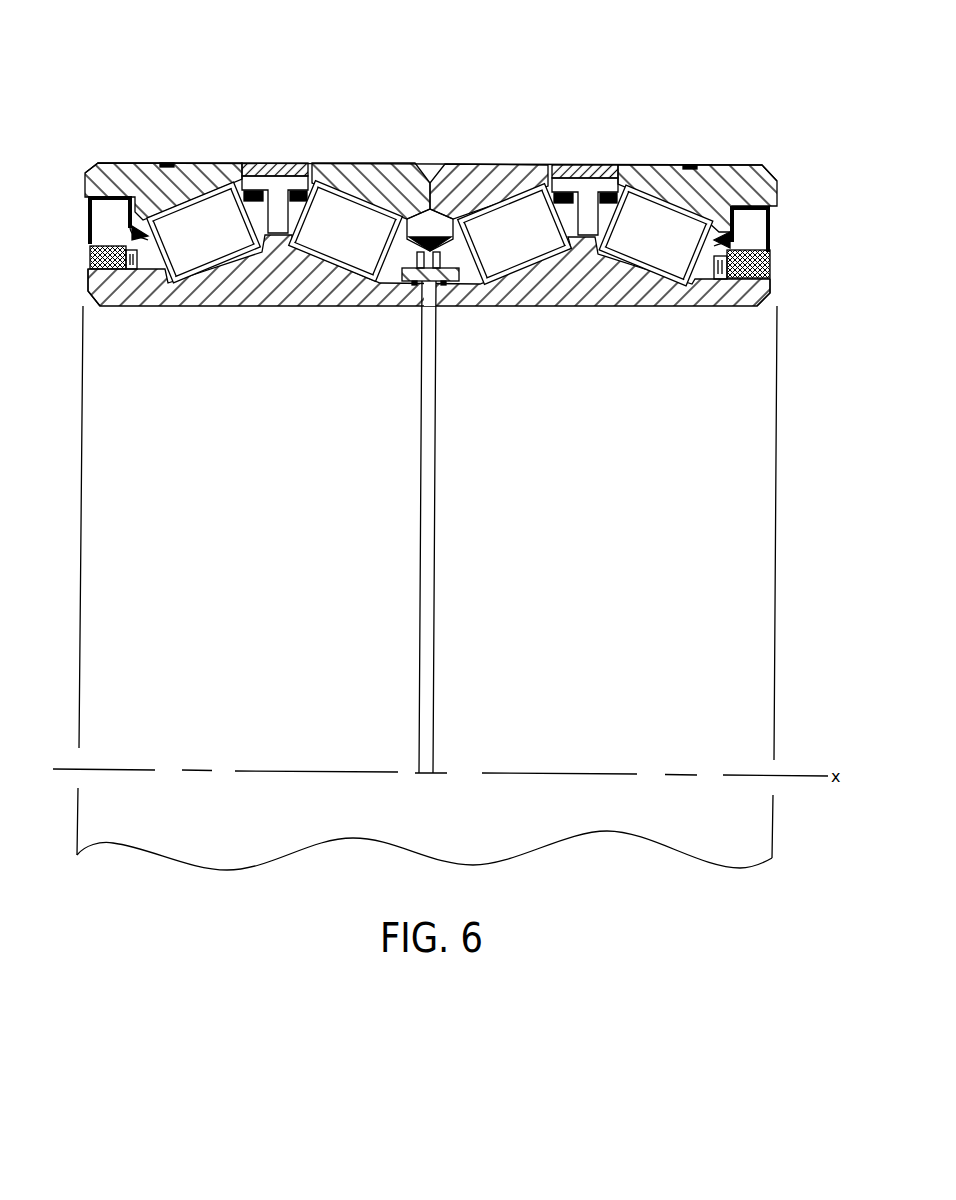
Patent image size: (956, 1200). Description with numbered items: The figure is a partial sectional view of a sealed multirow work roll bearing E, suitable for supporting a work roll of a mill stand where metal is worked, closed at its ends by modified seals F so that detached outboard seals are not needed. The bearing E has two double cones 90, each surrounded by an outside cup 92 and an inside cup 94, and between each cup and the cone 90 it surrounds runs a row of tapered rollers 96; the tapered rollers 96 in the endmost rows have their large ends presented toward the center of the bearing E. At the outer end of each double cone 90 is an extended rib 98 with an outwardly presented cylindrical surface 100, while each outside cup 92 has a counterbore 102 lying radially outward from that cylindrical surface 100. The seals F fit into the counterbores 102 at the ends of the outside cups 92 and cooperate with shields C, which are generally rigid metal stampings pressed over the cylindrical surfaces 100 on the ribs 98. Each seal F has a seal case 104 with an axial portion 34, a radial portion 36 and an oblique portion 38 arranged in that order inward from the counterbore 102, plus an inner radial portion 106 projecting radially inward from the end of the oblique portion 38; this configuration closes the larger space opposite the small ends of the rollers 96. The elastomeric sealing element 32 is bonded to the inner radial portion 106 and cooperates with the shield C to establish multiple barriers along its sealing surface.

The multirow bearing E is at (336, 162).
The elastomeric sealing element 32 is at (105, 276).
The axial portion 34 is at (745, 207).
The radial portion 36 is at (780, 218).
The oblique portion 38 is at (758, 236).
The double cone 90 is at (275, 290).
The outside cup 92 is at (192, 172).
The inside cup 94 is at (398, 163).
The tapered rollers 96 is at (220, 247).
The extended rib 98 is at (130, 284).
The cylindrical surface 100 is at (148, 265).
The counterbore 102 is at (110, 198).
The seal case 104 is at (88, 210).
The inner radial portion 106 is at (727, 268).
The shield C is at (88, 262).
The seal F is at (90, 236).